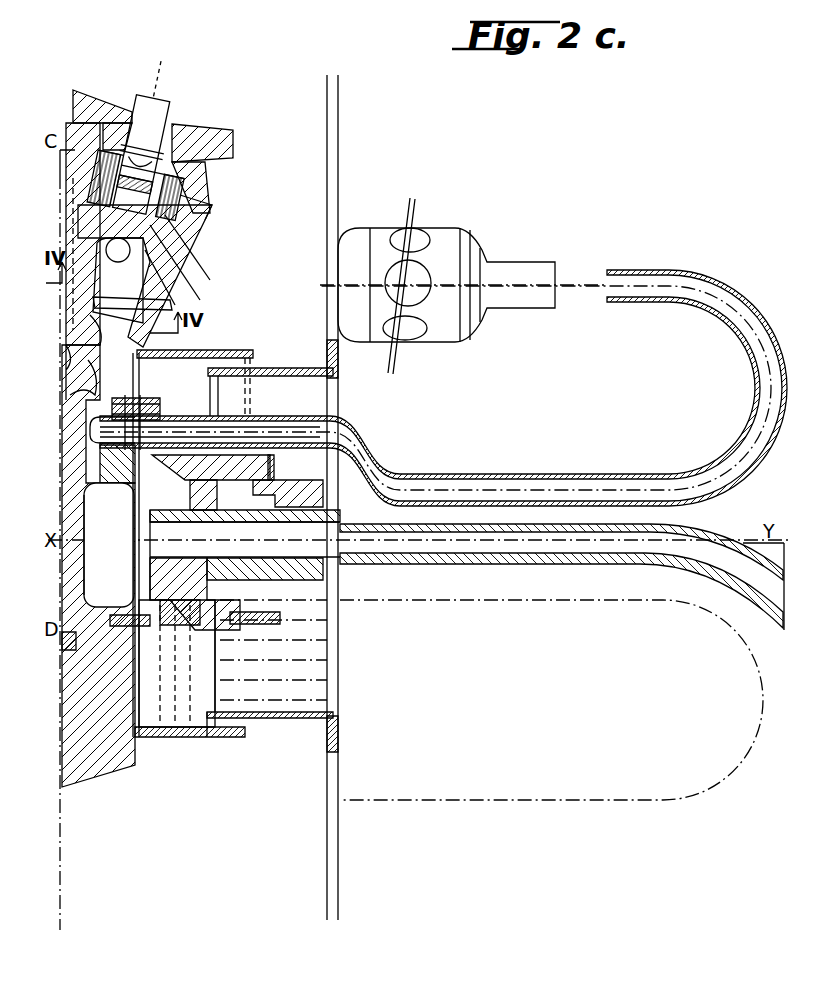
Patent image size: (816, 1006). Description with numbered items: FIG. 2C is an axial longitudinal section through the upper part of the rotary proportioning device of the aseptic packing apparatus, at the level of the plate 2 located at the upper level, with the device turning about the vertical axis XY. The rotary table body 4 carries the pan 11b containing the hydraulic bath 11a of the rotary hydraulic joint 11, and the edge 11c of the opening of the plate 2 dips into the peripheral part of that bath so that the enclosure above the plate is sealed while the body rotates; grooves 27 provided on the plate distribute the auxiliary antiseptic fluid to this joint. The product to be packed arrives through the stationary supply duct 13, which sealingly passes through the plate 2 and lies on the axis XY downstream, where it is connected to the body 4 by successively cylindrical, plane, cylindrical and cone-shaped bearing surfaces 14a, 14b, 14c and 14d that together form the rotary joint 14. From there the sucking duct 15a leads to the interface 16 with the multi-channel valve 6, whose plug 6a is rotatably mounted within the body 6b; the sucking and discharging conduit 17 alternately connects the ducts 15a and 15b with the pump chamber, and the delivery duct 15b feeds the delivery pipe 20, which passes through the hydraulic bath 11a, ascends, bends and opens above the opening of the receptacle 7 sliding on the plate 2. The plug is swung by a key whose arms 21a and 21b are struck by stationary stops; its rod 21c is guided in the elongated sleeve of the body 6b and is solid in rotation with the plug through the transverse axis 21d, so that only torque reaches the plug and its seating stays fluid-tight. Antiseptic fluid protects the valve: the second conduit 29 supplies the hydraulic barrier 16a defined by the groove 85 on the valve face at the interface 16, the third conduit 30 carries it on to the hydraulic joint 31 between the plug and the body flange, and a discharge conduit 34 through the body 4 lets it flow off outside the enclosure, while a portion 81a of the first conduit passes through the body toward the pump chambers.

The plate 2 is at (340, 168).
The rotary table block or body 4 is at (80, 782).
The multi-channel valve 6 is at (56, 184).
The plug 6a is at (170, 258).
The body of the switching member 6b is at (190, 182).
The receptacle 7 is at (433, 237).
The rotary hydraulic joint 11 is at (258, 722).
The hydraulic bath 11a is at (212, 722).
The pan 11b is at (158, 737).
The edge of the opening of the plate 11c is at (276, 368).
The supply duct 13 is at (584, 565).
The rotary joint 14 is at (140, 580).
The cylindrical bearing surface 14a is at (275, 497).
The plane bearing surface 14b is at (312, 440).
The cylindrical bearing surface 14c is at (236, 468).
The cone-shaped bearing surface 14d is at (188, 481).
The sucking duct 15a is at (108, 490).
The delivery duct 15b is at (160, 404).
The interface 16 is at (160, 300).
The hydraulic barrier 16a is at (101, 330).
The sucking and discharging conduit 17 is at (70, 318).
The delivery pipe 20 is at (384, 462).
The arm of the key 21a is at (112, 100).
The arm of the key 21b is at (222, 135).
The rod of the lever or key 21c is at (168, 108).
The transverse axis 21d is at (195, 245).
The grooves 27 is at (333, 770).
The second conduit 29 is at (76, 396).
The third conduit 30 is at (118, 280).
The hydraulic joint 31 is at (100, 160).
The discharge conduit 34 is at (74, 540).
The portion of the first conduit 81a is at (130, 392).
The groove 85 is at (135, 326).